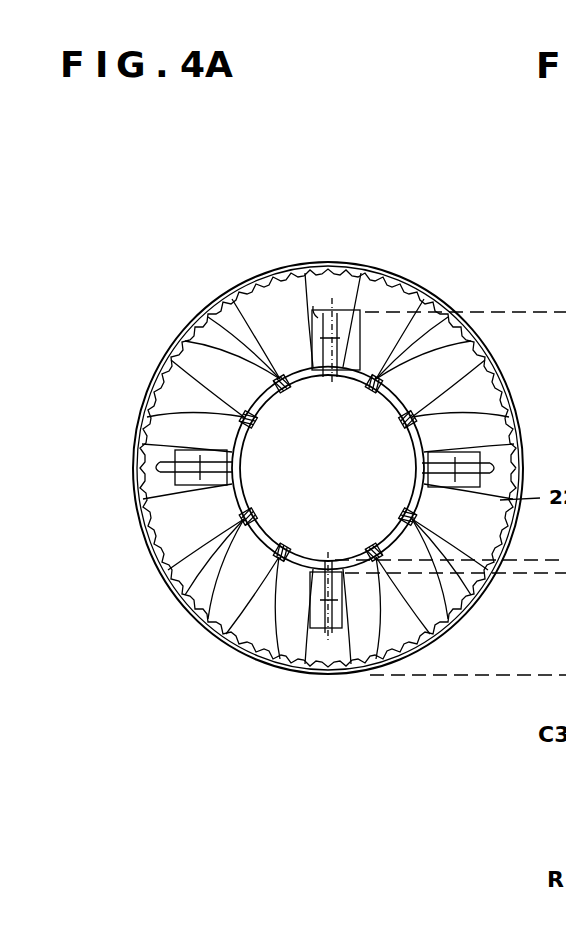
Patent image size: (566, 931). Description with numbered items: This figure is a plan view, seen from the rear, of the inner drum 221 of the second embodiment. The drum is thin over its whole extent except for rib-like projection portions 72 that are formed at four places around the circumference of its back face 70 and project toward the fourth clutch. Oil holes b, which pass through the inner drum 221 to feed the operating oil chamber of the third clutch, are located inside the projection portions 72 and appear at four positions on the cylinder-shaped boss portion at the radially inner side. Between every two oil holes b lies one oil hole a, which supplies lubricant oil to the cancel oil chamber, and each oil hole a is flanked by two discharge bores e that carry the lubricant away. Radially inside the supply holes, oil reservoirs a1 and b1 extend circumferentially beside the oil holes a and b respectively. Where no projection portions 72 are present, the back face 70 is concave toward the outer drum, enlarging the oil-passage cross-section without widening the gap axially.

The inner drum 221 is at (198, 216).
The back face 70 is at (273, 300).
The projection portions 72 is at (303, 307).
The oil holes a is at (471, 341).
The oil reservoirs a1 is at (448, 317).
The oil holes b is at (336, 308).
The oil reservoirs b1 is at (361, 273).
The discharge bores e is at (424, 299).